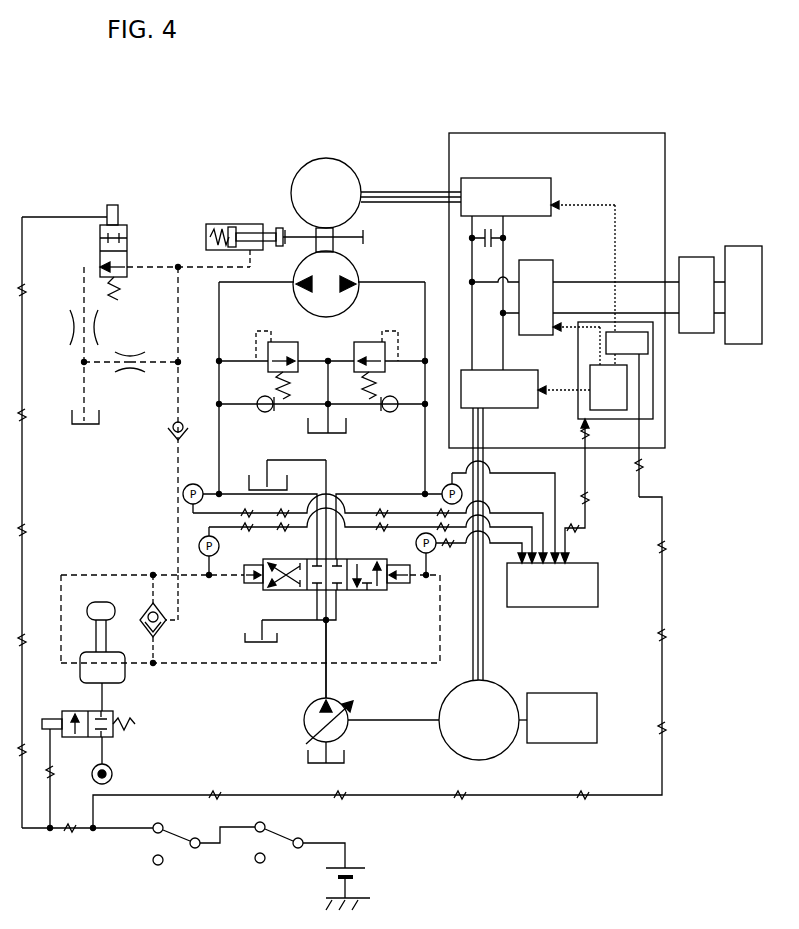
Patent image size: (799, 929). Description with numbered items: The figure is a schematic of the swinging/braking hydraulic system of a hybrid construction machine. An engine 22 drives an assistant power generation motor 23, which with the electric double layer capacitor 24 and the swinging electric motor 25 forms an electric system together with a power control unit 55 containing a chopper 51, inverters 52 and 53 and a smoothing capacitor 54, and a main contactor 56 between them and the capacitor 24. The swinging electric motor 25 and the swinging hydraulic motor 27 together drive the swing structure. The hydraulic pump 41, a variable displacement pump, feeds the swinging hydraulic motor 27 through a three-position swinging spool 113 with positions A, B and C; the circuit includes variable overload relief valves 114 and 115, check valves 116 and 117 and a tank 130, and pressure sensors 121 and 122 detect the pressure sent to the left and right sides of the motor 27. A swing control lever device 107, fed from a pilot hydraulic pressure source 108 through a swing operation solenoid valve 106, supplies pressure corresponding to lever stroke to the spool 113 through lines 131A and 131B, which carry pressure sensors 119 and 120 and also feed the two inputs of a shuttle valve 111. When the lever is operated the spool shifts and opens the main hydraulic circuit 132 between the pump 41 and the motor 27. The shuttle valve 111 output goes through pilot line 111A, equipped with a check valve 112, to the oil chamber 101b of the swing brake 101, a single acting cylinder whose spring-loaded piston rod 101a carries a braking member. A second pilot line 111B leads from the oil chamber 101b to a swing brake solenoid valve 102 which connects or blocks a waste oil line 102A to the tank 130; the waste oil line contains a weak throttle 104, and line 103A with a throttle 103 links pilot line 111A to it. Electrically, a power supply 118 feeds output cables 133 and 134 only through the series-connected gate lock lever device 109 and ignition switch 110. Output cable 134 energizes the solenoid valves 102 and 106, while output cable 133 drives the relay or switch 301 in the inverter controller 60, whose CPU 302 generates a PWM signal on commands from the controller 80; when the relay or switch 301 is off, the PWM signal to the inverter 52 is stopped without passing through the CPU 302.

The engine 22 is at (584, 693).
The assistant power generation motor 23 is at (500, 688).
The electric double layer capacitor 24 is at (744, 246).
The swinging electric motor 25 is at (350, 165).
The swinging hydraulic motor 27 is at (356, 272).
The hydraulic pump 41 is at (344, 728).
The chopper 51 is at (538, 335).
The inverter 52 is at (552, 192).
The inverter 53 is at (524, 409).
The smoothing capacitor 54 is at (504, 238).
The power control unit 55 is at (520, 132).
The main contactor 56 is at (696, 256).
The inverter controller 60 is at (654, 410).
The controller 80 is at (588, 562).
The swing brake 101 is at (228, 222).
The piston rod 101a is at (276, 228).
The oil chamber 101b is at (252, 256).
The swing brake solenoid valve 102 is at (127, 230).
The waste oil line 102A is at (84, 364).
The throttle 103 is at (133, 355).
The line 103A is at (178, 364).
The weak throttle 104 is at (72, 302).
The swing operation solenoid valve 106 is at (68, 711).
The swing control lever device 107 is at (112, 670).
The pilot hydraulic pressure source 108 is at (110, 772).
The gate lock lever device 109 is at (180, 832).
The ignition switch 110 is at (281, 835).
The shuttle valve 111 is at (166, 636).
The pilot line 111A is at (180, 380).
The pilot line 111B is at (150, 270).
The check valve 112 is at (172, 438).
The swinging spool 113 is at (276, 590).
The variable overload relief valve 114 is at (274, 340).
The variable overload relief valve 115 is at (376, 340).
The check valve 116 is at (259, 418).
The check valve 117 is at (387, 418).
The power supply 118 is at (352, 864).
The pressure sensor 119 is at (225, 551).
The pressure sensor 120 is at (424, 554).
The pressure sensor 121 is at (193, 484).
The pressure sensor 122 is at (452, 484).
The tank 130 is at (82, 428).
The line 131A is at (102, 573).
The line 131B is at (234, 668).
The main hydraulic circuit 132 is at (326, 668).
The output cable 133 is at (515, 794).
The output cable 134 is at (24, 524).
The relay or switch 301 is at (648, 340).
The CPU 302 is at (590, 408).